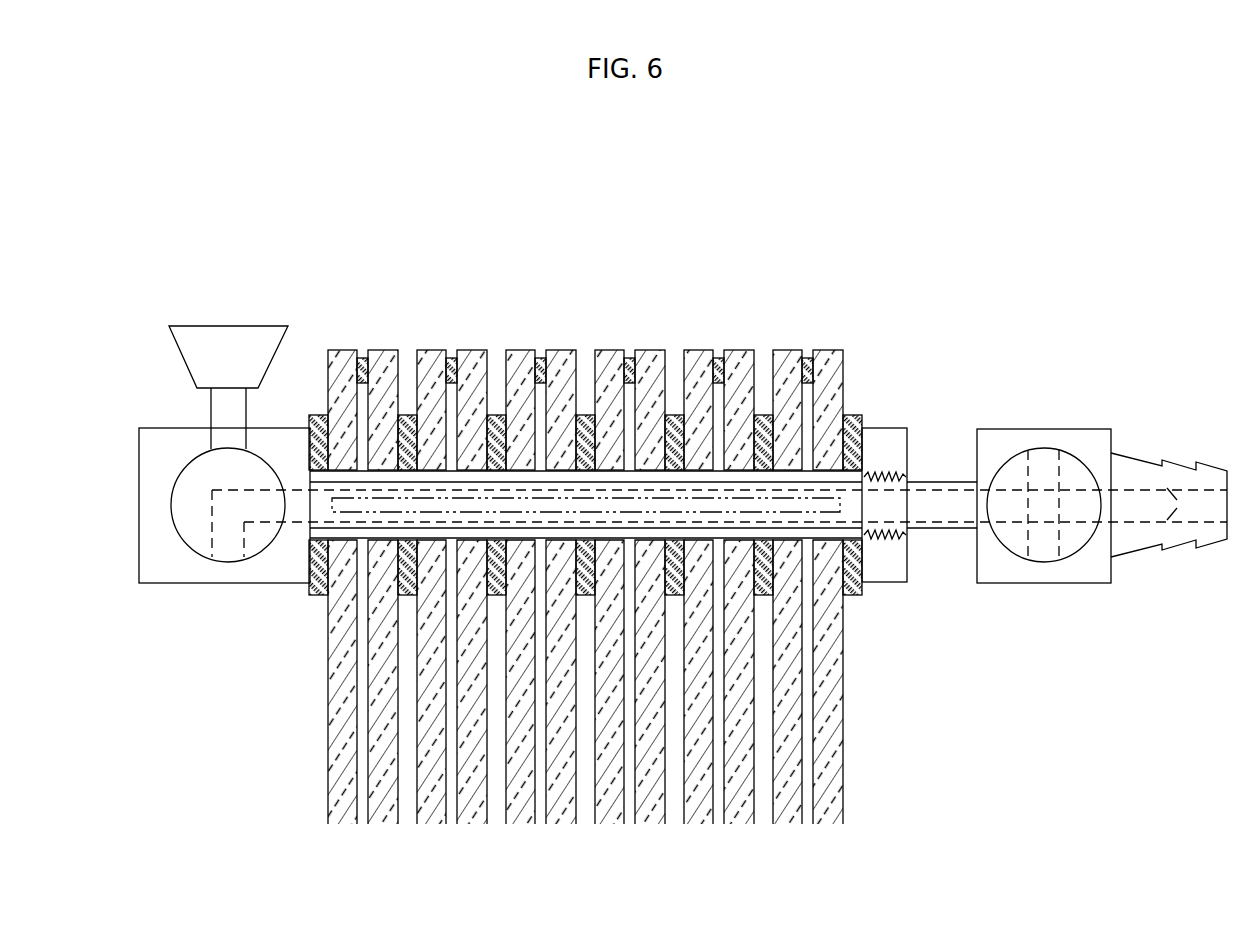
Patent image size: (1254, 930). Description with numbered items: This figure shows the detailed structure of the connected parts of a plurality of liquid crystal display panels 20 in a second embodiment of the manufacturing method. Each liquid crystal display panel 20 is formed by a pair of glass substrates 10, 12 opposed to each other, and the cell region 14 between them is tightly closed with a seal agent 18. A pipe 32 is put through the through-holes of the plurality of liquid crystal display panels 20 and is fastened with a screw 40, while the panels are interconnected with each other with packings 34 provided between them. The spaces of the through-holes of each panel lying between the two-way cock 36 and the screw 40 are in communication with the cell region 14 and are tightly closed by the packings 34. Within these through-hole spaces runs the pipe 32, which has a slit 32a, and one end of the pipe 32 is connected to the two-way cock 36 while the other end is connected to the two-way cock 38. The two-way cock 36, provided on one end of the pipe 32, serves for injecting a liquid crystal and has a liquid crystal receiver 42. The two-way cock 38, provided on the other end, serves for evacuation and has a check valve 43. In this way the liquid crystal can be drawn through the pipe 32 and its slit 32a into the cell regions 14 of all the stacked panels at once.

The glass substrate 10 is at (345, 352).
The glass substrate 12 is at (380, 352).
The cell region 14 is at (363, 800).
The seal agent 18 is at (362, 355).
The liquid crystal display panel 20 is at (590, 333).
The pipe 32 is at (352, 530).
The slit 32a is at (787, 513).
The packing 34 is at (318, 413).
The two-way cock 36 is at (187, 583).
The two-way cock 38 is at (1043, 583).
The screw 40 is at (888, 583).
The liquid crystal receiver 42 is at (183, 362).
The check valve 43 is at (1172, 552).